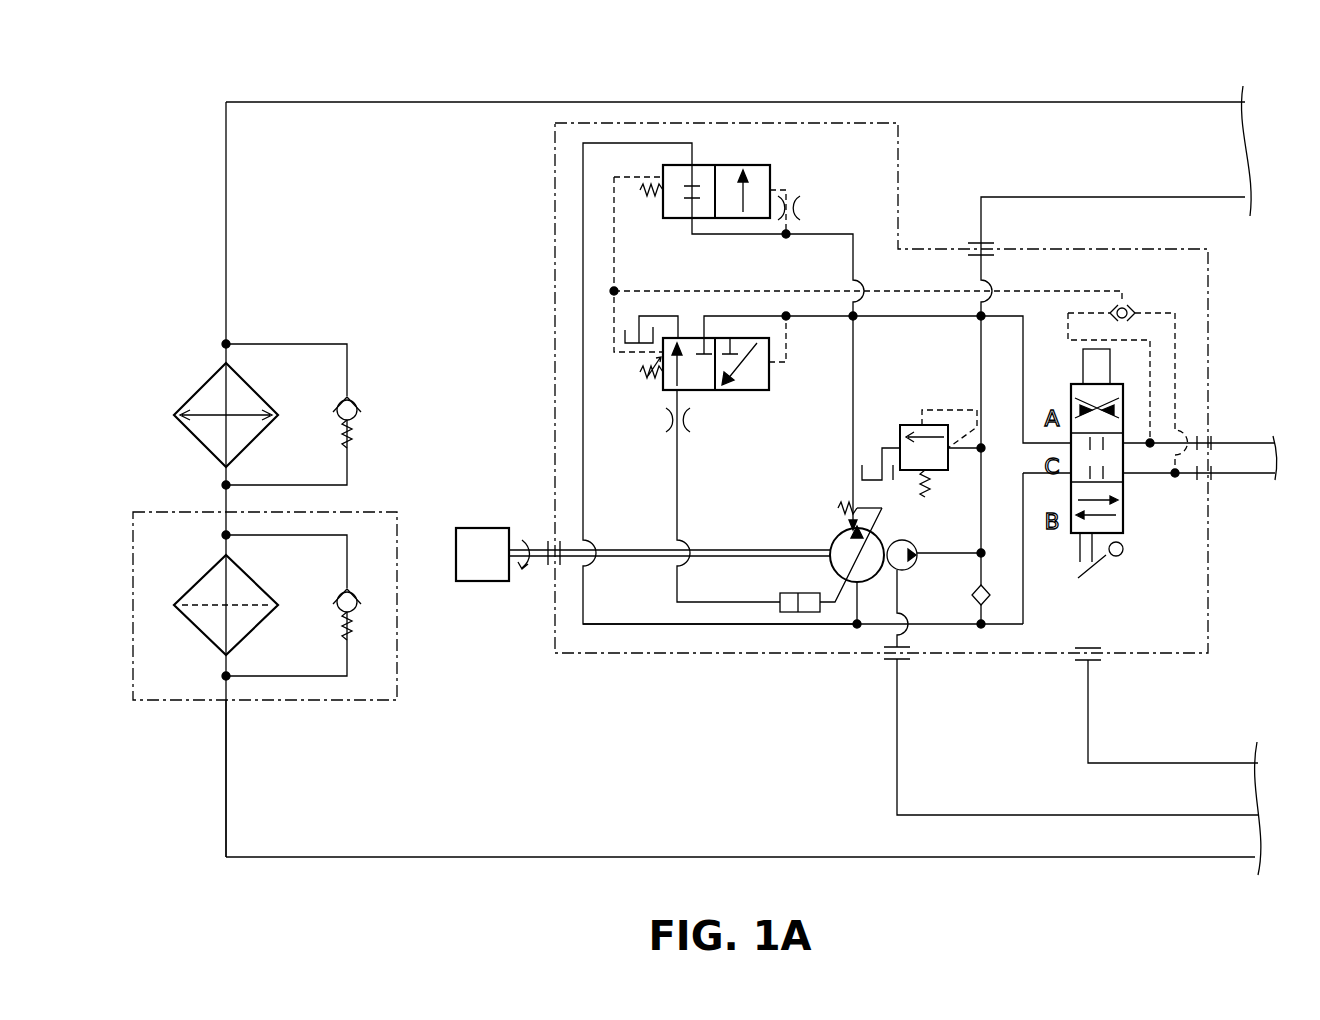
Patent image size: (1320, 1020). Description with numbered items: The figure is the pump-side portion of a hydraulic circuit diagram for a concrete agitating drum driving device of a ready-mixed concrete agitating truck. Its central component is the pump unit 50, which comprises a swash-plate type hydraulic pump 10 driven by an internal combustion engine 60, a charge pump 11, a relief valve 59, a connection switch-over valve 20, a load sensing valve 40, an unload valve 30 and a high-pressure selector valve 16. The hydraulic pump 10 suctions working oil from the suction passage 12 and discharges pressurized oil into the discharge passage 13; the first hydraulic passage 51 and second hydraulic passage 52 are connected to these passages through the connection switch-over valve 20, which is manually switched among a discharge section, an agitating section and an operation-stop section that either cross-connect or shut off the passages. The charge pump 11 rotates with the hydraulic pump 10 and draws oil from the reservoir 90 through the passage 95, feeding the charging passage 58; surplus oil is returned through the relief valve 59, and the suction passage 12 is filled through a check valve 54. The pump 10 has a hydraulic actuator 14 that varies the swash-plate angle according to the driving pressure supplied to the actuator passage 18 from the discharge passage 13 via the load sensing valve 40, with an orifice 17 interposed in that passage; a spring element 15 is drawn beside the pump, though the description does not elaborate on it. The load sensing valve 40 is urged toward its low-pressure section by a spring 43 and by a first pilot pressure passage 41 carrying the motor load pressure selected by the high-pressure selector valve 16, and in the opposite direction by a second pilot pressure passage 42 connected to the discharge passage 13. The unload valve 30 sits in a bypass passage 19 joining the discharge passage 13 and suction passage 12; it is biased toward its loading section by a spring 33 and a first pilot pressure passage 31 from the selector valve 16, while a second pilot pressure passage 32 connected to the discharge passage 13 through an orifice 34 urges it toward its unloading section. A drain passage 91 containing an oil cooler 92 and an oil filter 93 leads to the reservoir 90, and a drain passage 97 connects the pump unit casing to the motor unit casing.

The hydraulic pump 10 is at (835, 542).
The charge pump 11 is at (912, 572).
The suction passage 12 is at (1023, 603).
The discharge passage 13 is at (853, 378).
The hydraulic actuator 14 is at (795, 612).
The spring 15 is at (836, 505).
The high-pressure selector valve 16 is at (1130, 305).
The orifice 17 is at (660, 440).
The actuator passage 18 is at (700, 603).
The bypass passage 19 is at (583, 243).
The connection switch-over valve 20 is at (1125, 534).
The unload valve 30 is at (772, 166).
The first pilot pressure passage 31 is at (614, 176).
The second pilot pressure passage 32 is at (786, 185).
The spring 33 is at (648, 205).
The orifice 34 is at (804, 208).
The load sensing valve 40 is at (656, 400).
The first pilot pressure passage 41 is at (625, 343).
The second pilot pressure passage 42 is at (786, 350).
The spring 43 is at (638, 372).
The pump unit 50 is at (900, 158).
The first hydraulic passage 51 is at (1244, 441).
The second hydraulic passage 52 is at (1244, 476).
The check valve 54 is at (992, 600).
The charging passage 58 is at (1133, 197).
The relief valve 59 is at (940, 477).
The internal combustion engine 60 is at (476, 583).
The reservoir 90 is at (890, 482).
The drain passage 91 is at (232, 778).
The oil cooler 92 is at (200, 385).
The oil filter 93 is at (192, 628).
The passage 95 is at (1048, 814).
The drain passage 97 is at (1168, 762).